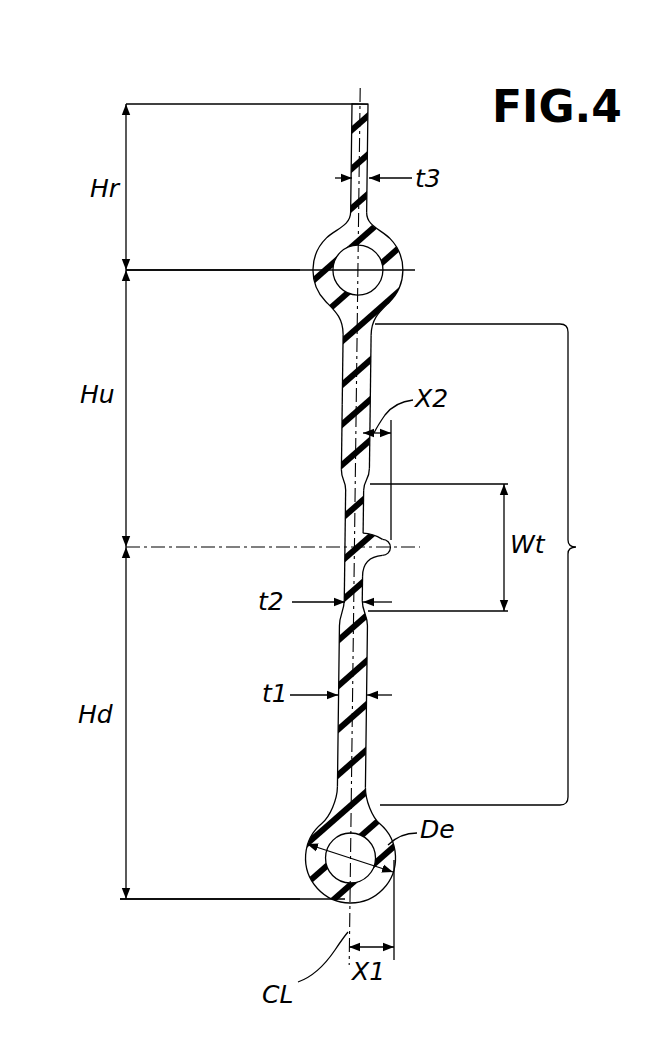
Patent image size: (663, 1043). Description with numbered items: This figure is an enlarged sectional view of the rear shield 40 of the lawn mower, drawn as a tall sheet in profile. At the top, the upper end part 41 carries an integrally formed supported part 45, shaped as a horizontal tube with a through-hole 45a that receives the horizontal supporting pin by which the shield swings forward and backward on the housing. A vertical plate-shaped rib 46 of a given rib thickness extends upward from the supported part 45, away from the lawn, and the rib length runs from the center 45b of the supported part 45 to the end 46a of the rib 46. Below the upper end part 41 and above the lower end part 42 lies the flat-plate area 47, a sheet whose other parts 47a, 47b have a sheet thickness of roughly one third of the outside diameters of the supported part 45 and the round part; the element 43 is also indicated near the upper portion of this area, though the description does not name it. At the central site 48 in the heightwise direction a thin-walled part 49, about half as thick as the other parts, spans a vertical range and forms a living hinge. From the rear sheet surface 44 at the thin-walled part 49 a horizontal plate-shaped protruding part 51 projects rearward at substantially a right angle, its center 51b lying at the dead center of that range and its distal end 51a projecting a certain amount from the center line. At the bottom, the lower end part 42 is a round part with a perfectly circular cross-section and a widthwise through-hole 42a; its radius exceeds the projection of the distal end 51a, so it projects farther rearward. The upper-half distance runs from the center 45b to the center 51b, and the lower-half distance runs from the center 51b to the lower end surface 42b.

The rear shield 40 is at (125, 92).
The upper end part 41 is at (333, 232).
The lower end part (round part) 42 is at (310, 856).
The through-hole 42a is at (337, 872).
The lower end surface 42b is at (176, 901).
The upper rod portion 43 is at (343, 362).
The rear sheet surface 44 is at (372, 343).
The supported part 45 is at (322, 258).
The through-hole 45a is at (345, 284).
The center of the supported part 45b is at (174, 269).
The rib 46 is at (352, 150).
The end of the rib 46a is at (355, 101).
The flat-plate area 47 is at (494, 564).
The other part 47a is at (346, 404).
The other part 47b is at (340, 747).
The central site 48 is at (333, 503).
The thin-walled part 49 is at (346, 541).
The protruding part 51 is at (391, 561).
The distal end 51a is at (393, 546).
The center of the protruding part 51b is at (173, 546).